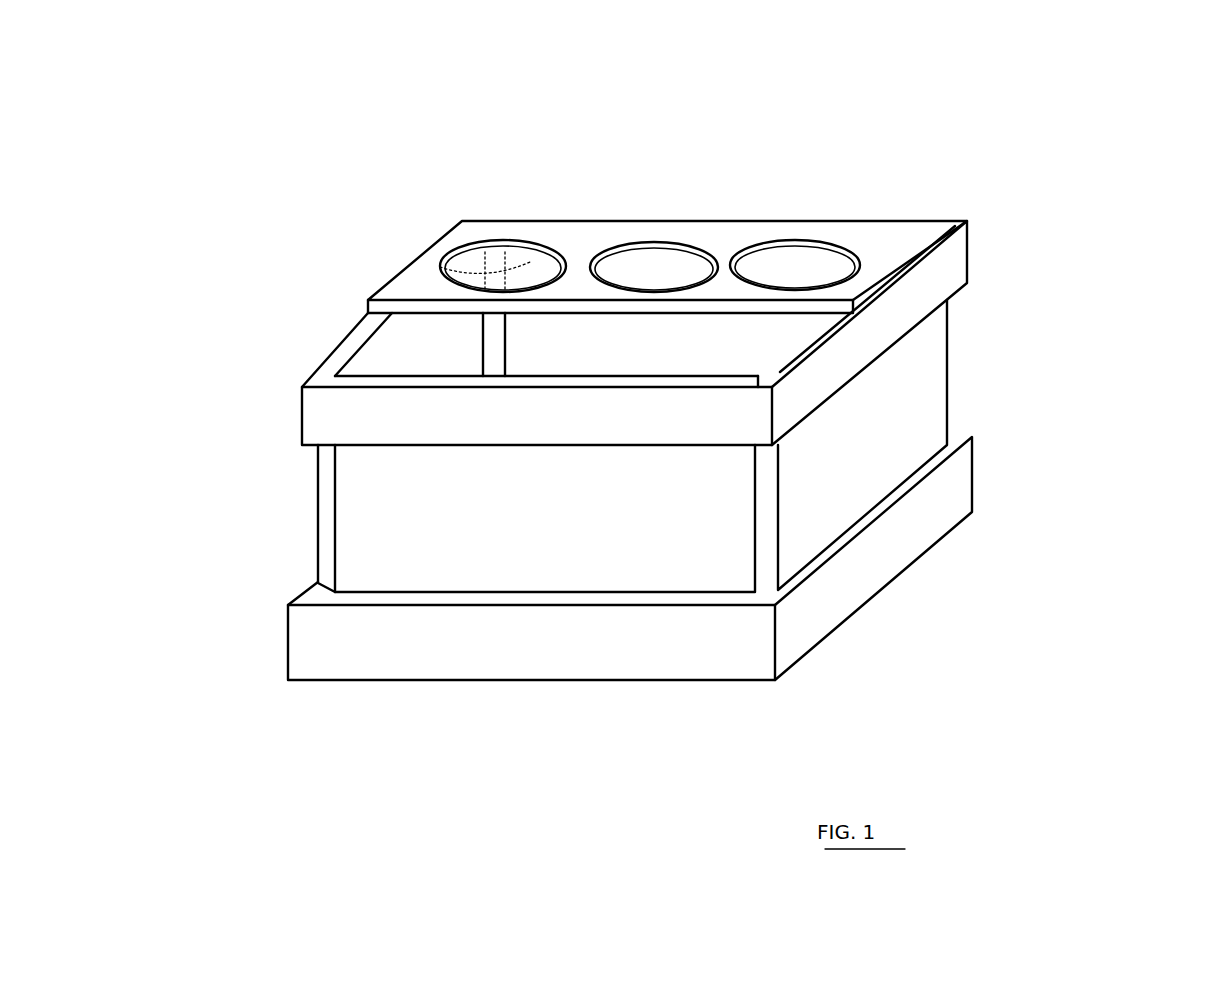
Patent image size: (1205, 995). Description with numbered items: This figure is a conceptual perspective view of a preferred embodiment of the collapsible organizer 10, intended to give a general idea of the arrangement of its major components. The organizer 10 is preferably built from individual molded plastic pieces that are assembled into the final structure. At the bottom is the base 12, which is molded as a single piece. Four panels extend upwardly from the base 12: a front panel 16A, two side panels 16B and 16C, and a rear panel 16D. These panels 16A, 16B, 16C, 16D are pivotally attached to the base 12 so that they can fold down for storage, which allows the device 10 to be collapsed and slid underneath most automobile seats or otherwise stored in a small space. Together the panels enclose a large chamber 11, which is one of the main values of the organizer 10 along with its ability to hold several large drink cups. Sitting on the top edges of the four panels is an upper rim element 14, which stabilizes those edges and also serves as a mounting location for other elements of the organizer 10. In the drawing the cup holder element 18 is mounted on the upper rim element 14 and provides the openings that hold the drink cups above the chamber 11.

The collapsible organizer 10 is at (1020, 137).
The chamber 11 is at (410, 366).
The base 12 is at (888, 565).
The upper rim element 14 is at (302, 425).
The front panel 16A is at (515, 557).
The side panel 16B is at (923, 380).
The side panel 16C is at (303, 548).
The rear panel 16D is at (440, 266).
The cup holder element 18 is at (597, 238).